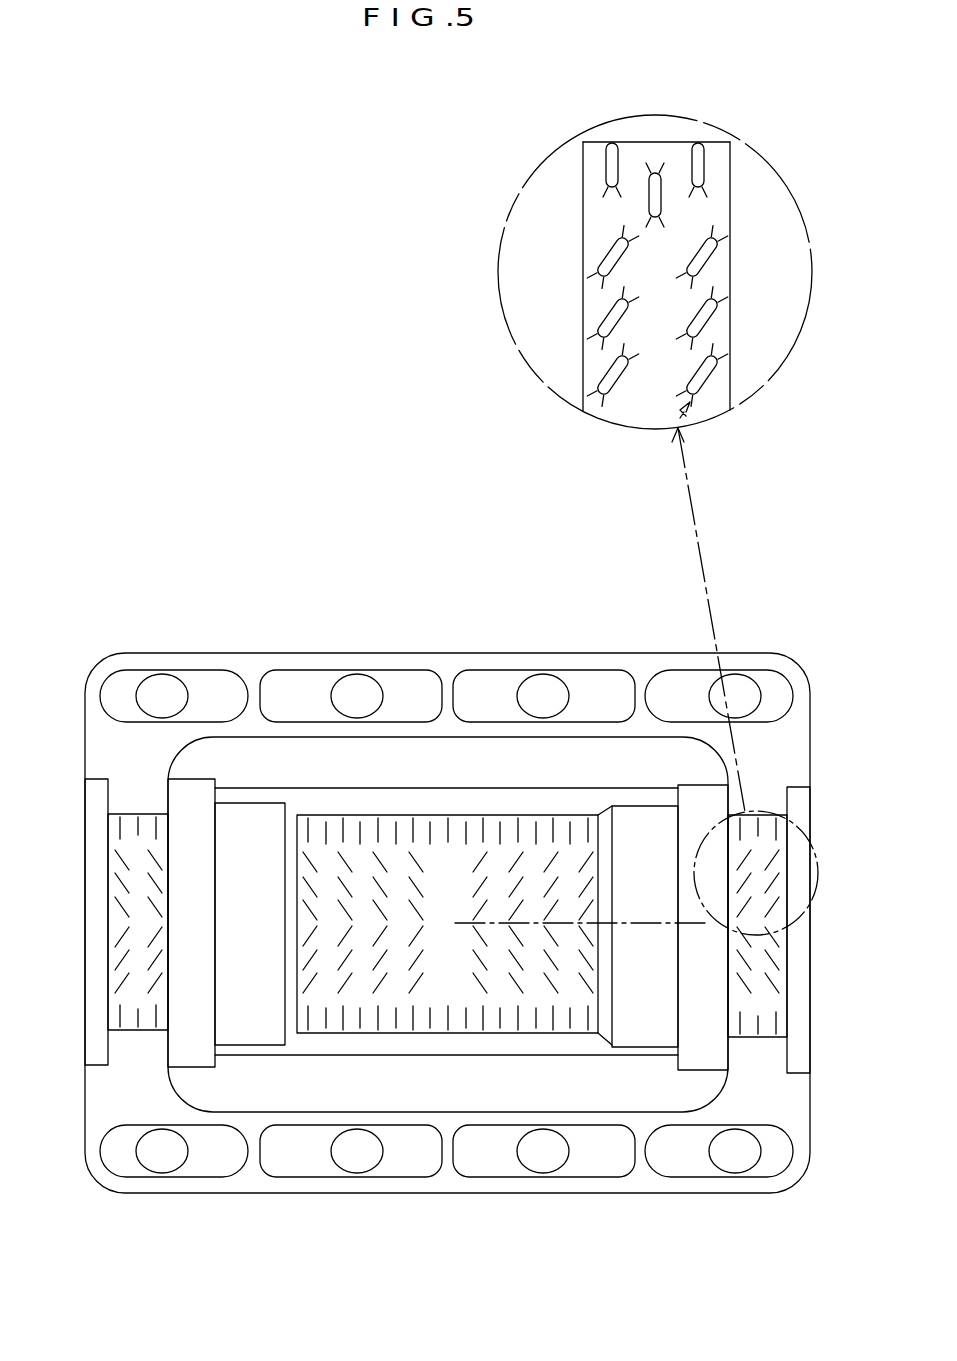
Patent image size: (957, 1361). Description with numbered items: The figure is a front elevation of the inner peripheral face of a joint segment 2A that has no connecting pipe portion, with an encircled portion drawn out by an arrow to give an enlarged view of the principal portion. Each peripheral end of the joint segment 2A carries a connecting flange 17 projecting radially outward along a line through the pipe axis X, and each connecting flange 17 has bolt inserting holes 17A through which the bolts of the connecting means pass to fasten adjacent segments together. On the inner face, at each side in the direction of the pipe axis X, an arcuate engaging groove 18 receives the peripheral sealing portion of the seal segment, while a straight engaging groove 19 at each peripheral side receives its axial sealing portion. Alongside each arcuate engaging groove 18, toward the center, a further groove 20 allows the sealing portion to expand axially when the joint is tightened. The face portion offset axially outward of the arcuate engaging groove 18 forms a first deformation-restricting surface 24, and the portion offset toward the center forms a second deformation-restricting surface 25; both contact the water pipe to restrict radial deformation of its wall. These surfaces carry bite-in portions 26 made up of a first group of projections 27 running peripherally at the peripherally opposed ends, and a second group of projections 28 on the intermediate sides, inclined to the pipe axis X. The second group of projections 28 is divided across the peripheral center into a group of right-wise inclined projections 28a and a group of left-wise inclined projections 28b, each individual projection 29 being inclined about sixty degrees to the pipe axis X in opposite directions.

The joint segment 2A is at (772, 658).
The connecting flange 17 is at (415, 655).
The bolt inserting hole 17A is at (160, 686).
The arcuate engaging groove 18 is at (195, 792).
The straight engaging groove 19 is at (341, 748).
The further groove 20 is at (262, 808).
The first deformation-restricting surface 24 is at (155, 846).
The second deformation-restricting surface 25 is at (447, 840).
The bite-in portion 26 is at (444, 803).
The first group of projections 27 is at (96, 838).
The second group of projections 28 is at (448, 922).
The group of right-wise inclined projections 28a is at (591, 320).
The group of left-wise inclined projections 28b is at (175, 886).
The projection 29 is at (710, 257).
The pipe axis X is at (640, 920).